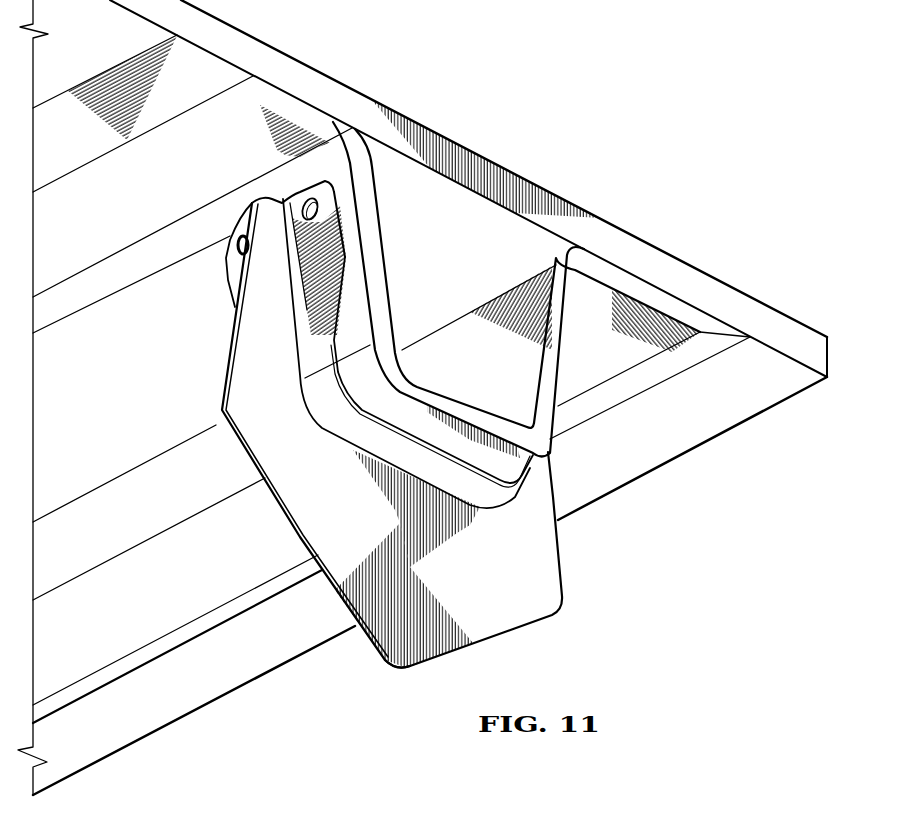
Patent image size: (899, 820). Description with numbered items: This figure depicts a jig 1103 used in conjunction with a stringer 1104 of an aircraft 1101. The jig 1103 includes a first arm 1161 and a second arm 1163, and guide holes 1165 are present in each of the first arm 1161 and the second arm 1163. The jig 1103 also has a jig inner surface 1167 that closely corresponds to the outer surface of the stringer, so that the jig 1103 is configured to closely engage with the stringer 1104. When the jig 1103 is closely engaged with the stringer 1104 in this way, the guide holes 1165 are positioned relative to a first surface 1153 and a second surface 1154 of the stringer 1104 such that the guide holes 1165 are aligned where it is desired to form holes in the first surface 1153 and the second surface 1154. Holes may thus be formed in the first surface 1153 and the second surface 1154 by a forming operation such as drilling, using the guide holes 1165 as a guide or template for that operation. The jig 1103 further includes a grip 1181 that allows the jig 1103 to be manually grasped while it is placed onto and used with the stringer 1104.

The aircraft 1101 is at (521, 170).
The jig 1103 is at (413, 417).
The stringer 1104 is at (565, 381).
The first surface 1153 is at (135, 390).
The second surface 1154 is at (568, 317).
The first arm 1161 is at (243, 367).
The second arm 1163 is at (552, 547).
The guide holes 1165 is at (235, 245).
The jig inner surface 1167 is at (350, 304).
The grip 1181 is at (387, 667).